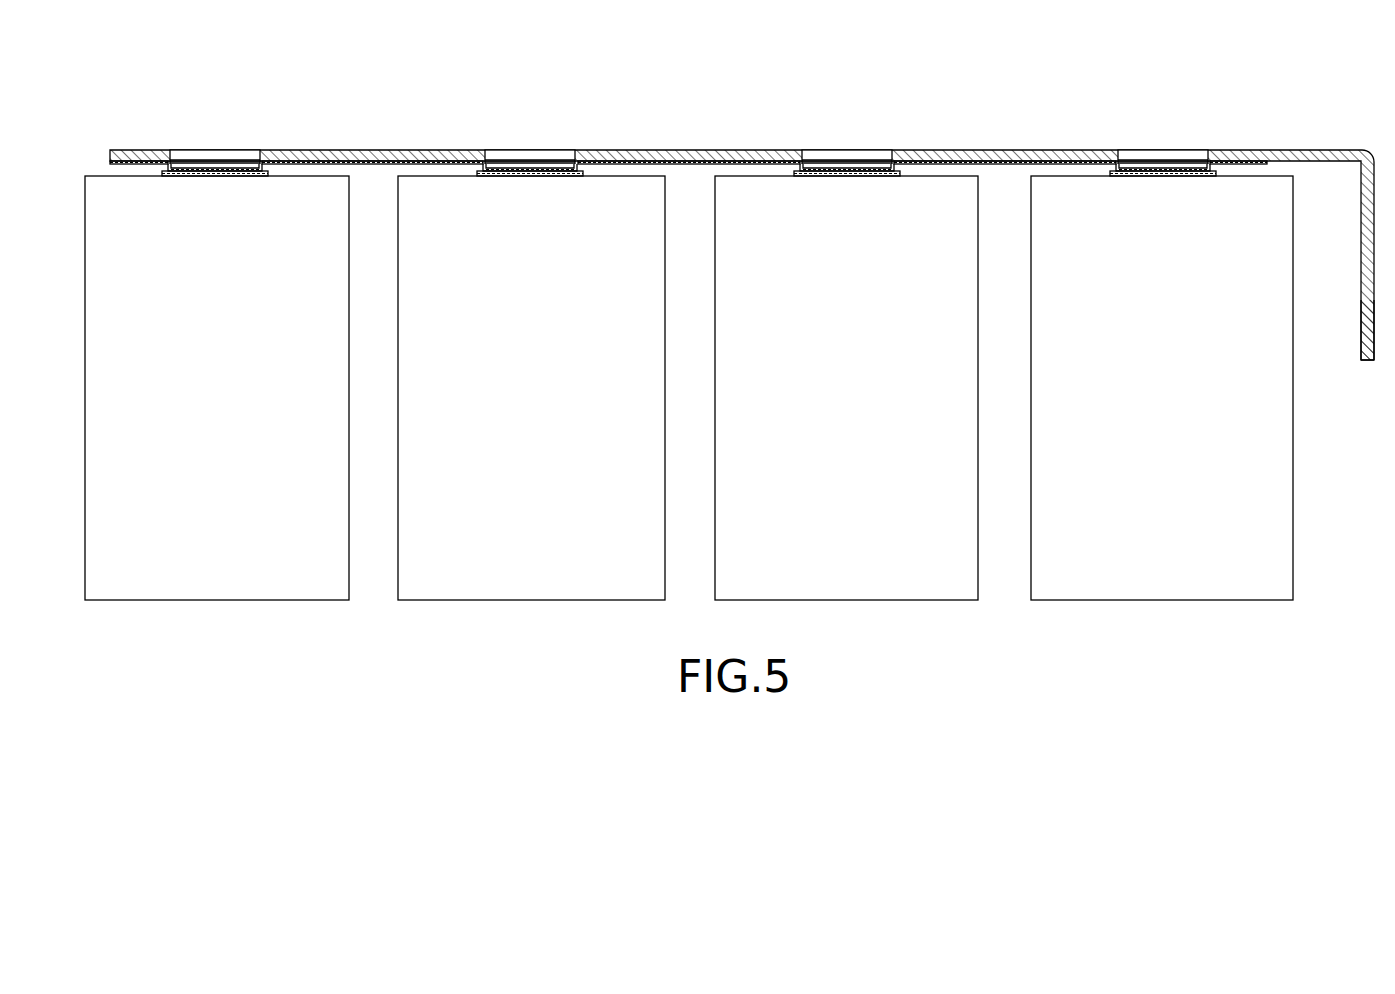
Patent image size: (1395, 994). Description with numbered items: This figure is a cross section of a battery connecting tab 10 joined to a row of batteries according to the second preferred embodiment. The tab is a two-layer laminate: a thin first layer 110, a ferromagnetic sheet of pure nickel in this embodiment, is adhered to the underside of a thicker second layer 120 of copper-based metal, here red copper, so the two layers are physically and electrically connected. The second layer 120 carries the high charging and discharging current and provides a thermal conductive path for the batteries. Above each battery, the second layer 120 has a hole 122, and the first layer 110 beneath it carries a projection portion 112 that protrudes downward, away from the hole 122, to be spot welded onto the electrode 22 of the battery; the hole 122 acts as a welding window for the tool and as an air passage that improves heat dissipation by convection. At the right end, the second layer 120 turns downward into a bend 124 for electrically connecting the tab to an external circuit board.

The bus bar assembly 10 is at (1005, 148).
The electrode 22 is at (187, 170).
The first layer 110 is at (368, 166).
The projection portion 112 is at (227, 166).
The second layer 120 is at (693, 150).
The hole 122 is at (203, 157).
The bend 124 is at (1361, 303).